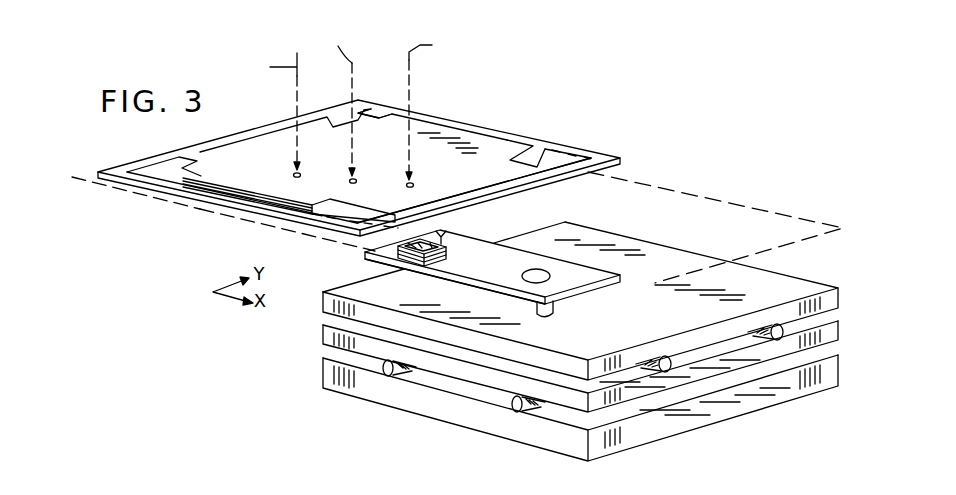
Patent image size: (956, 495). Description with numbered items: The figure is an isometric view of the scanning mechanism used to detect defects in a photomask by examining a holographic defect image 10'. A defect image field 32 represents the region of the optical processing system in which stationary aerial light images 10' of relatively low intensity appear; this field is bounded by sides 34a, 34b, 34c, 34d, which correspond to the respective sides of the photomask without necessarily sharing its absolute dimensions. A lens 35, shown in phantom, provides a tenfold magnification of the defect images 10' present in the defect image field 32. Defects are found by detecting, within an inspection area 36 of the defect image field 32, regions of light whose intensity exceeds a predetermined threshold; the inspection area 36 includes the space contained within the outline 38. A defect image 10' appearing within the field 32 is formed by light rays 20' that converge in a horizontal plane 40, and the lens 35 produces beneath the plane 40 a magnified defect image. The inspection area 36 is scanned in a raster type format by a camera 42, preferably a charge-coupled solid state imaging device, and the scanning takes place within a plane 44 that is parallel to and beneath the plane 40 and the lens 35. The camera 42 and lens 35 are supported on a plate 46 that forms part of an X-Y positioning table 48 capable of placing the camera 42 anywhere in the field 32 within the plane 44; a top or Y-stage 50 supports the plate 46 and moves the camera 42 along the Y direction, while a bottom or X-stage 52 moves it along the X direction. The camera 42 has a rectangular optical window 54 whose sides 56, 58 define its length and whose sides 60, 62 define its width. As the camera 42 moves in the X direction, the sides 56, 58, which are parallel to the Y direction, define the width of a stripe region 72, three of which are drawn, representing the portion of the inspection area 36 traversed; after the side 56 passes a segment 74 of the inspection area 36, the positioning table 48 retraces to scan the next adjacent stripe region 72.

The defect image 10' is at (341, 162).
The light rays 20' is at (347, 102).
The defect image field 32 is at (329, 109).
The side 34a is at (140, 201).
The side 34b is at (556, 171).
The side 34c is at (387, 112).
The side 34d is at (166, 157).
The lens 35 is at (452, 228).
The inspection area 36 is at (426, 130).
The outline 38 is at (526, 146).
The horizontal plane 40 is at (186, 196).
The camera 42 is at (443, 240).
The plane 44 is at (751, 205).
The plate 46 is at (504, 278).
The X-Y positioning table 48 is at (348, 415).
The Y-stage 50 is at (322, 298).
The X-stage 52 is at (322, 328).
The optical window 54 is at (421, 246).
The side 56 is at (423, 263).
The side 58 is at (416, 246).
The side 60 is at (432, 246).
The side 62 is at (367, 257).
The stripe region 72 is at (243, 192).
The segment 74 is at (332, 200).